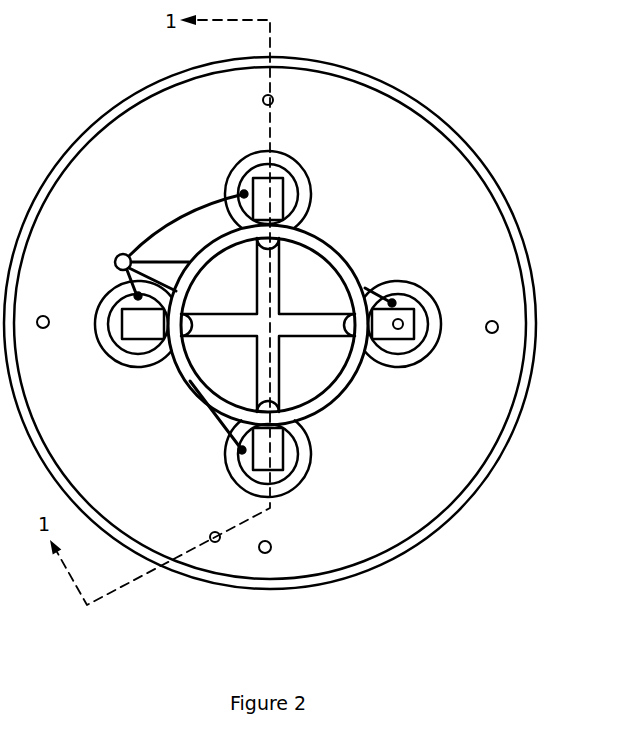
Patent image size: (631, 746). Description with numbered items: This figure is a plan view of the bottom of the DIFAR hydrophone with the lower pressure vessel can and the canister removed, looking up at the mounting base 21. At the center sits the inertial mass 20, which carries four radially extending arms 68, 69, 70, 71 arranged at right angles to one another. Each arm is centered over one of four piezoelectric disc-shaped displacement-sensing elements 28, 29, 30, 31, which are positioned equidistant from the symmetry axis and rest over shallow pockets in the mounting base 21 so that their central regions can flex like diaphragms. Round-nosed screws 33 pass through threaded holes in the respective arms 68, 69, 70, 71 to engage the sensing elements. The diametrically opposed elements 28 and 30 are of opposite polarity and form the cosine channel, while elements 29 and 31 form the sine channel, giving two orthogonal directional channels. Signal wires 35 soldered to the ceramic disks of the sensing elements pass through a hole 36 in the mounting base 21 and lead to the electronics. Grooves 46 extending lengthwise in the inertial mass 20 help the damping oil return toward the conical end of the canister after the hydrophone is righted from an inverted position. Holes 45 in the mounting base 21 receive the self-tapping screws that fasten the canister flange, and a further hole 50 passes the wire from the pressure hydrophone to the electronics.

The inertial mass 20 is at (330, 288).
The mounting base 21 is at (498, 207).
The piezoelectric disc-shaped displacement-sensing element 28 is at (418, 336).
The piezoelectric disc-shaped displacement-sensing element 29 is at (287, 173).
The piezoelectric disc-shaped displacement-sensing element 30 is at (118, 321).
The piezoelectric disc-shaped displacement-sensing element 31 is at (291, 458).
The round-nosed screw 33 is at (402, 335).
The signal wires 35 is at (187, 218).
The hole 36 is at (123, 252).
The hole 45 is at (274, 100).
The grooves 46 is at (257, 378).
The hole 50 is at (210, 532).
The radial arm 68 is at (410, 292).
The radial arm 69 is at (281, 205).
The radial arm 70 is at (133, 339).
The radial arm 71 is at (282, 470).